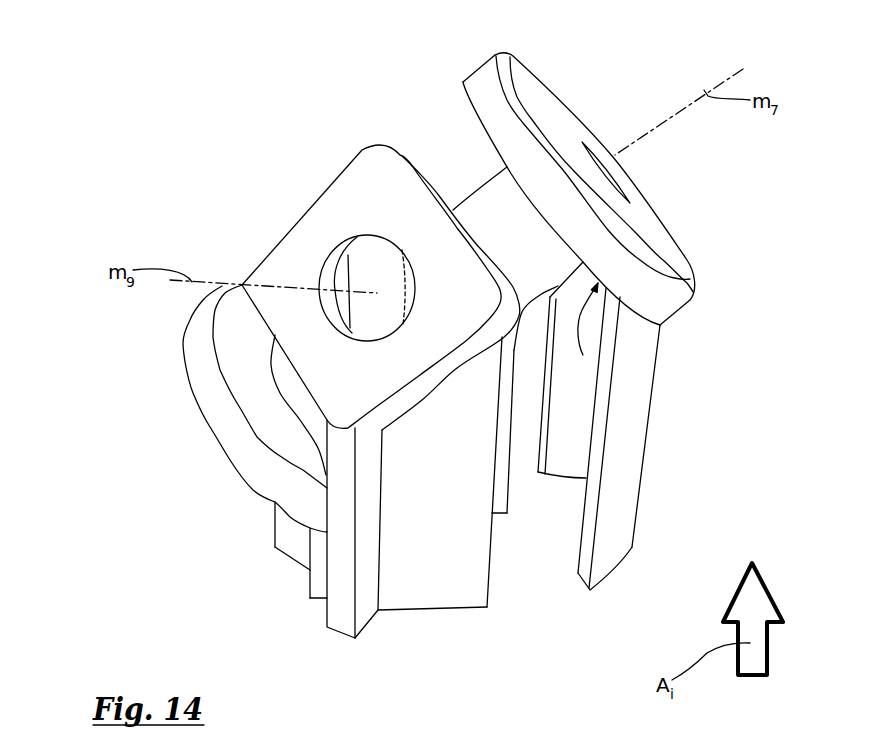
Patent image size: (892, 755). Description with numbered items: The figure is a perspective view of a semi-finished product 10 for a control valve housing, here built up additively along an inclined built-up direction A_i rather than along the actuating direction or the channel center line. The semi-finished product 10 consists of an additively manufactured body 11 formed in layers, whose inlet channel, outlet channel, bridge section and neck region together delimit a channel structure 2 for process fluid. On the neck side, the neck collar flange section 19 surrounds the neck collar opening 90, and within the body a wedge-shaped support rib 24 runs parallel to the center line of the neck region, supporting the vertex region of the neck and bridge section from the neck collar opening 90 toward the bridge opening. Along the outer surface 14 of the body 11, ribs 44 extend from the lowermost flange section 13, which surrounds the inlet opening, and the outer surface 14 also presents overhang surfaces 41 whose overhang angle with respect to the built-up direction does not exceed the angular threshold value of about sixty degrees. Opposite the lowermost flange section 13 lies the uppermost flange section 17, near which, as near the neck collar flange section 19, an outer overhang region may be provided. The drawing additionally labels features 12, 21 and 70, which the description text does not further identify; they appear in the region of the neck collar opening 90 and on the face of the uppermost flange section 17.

The semi-finished product 10 is at (228, 90).
The additively manufactured body 11 is at (470, 220).
The curved collar 12 is at (353, 330).
The lowermost flange section 13 is at (193, 362).
The outer surface 14 is at (495, 213).
The uppermost flange section 17 is at (480, 78).
The neck collar flange section 19 is at (342, 197).
The channel structure 2 is at (325, 284).
The rim 21 is at (350, 252).
The support rib 24 is at (328, 280).
The overhang surfaces 41 is at (527, 293).
The rib 44 is at (613, 528).
The slot 70 is at (618, 182).
The neck collar opening 90 is at (388, 252).